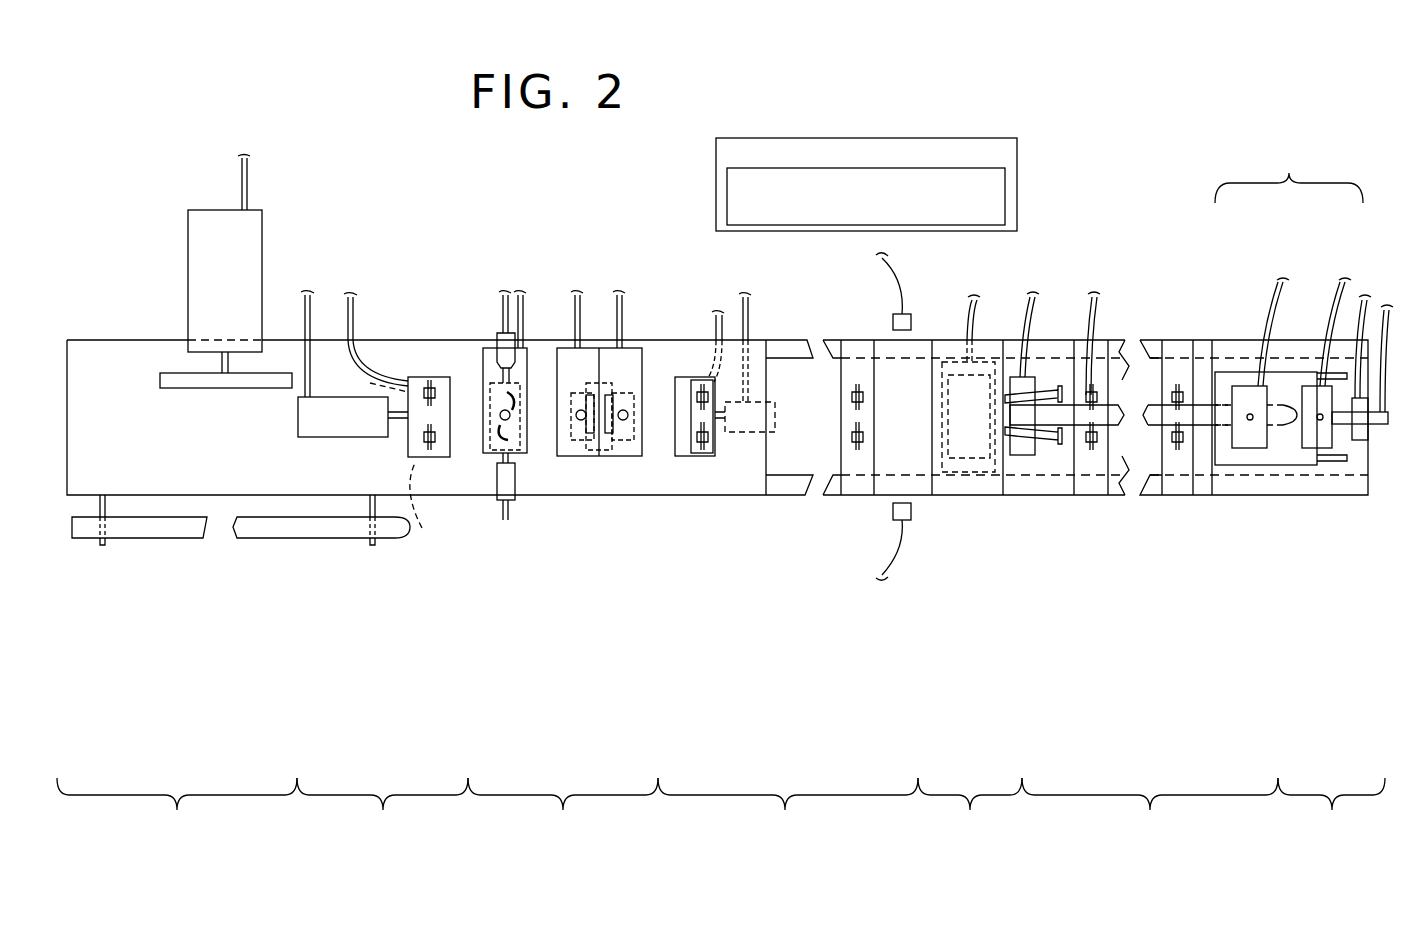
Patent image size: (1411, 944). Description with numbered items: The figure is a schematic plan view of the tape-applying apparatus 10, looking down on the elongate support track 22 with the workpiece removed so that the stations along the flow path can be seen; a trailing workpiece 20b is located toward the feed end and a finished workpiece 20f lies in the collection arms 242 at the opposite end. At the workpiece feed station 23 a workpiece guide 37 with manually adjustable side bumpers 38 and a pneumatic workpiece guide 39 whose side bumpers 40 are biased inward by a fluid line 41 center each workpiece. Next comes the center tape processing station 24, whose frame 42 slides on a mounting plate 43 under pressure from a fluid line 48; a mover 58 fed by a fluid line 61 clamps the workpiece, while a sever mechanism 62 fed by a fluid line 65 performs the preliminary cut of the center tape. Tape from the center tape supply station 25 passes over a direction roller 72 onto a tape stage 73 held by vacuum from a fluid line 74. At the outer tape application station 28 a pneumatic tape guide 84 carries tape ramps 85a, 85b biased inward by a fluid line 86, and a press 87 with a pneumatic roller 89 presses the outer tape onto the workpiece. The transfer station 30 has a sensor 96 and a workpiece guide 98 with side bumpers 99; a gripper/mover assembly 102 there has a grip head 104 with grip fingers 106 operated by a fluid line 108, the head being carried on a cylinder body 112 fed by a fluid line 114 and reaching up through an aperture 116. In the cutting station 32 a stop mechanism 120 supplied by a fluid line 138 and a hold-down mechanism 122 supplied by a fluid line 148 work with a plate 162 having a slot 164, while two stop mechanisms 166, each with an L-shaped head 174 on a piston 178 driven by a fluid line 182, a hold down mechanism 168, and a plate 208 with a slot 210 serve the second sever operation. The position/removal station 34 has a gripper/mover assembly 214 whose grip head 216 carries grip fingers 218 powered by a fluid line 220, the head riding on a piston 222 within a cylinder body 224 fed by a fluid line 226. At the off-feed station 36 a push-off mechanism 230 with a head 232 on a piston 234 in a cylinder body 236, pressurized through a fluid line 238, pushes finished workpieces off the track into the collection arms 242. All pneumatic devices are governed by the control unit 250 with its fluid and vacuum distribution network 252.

The apparatus 10 is at (1105, 150).
The trailing workpiece 20b is at (1128, 408).
The finished workpiece 20f is at (278, 528).
The elongate support track 22 is at (100, 340).
The workpiece feed station 23 is at (1150, 810).
The center tape processing station 24 is at (1289, 175).
The center tape supply station 25 is at (1331, 810).
The outer tape application station 28 is at (970, 810).
The transfer station 30 is at (788, 810).
The cutting station 32 is at (563, 810).
The position/removal station 34 is at (382, 810).
The off-feed station 36 is at (177, 810).
The workpiece guide 37 is at (1163, 490).
The movable side bumpers 38 is at (1172, 392).
The pneumatic workpiece guide 39 is at (1092, 494).
The side bumpers 40 is at (1084, 390).
The fluid line 41 is at (1096, 312).
The frame 42 is at (1241, 462).
The mounting plate 43 is at (1282, 470).
The fluid line 48 is at (1378, 302).
The mover 58 is at (1242, 390).
The fluid line 61 is at (1268, 308).
The sever mechanism 62 is at (1300, 388).
The fluid line 65 is at (1330, 310).
The direction roller 72 is at (1380, 460).
The tape stage 73 is at (1352, 466).
The fluid line 74 is at (1356, 350).
The pneumatic tape guide 84 is at (1028, 456).
The tape ramp 85a is at (1042, 392).
The tape ramp 85b is at (1040, 455).
The fluid line 86 is at (1024, 322).
The press 87 is at (972, 494).
The pneumatic roller 89 is at (962, 433).
The sensor 96 is at (893, 320).
The workpiece guide 98 is at (851, 492).
The movable side bumpers 99 is at (866, 397).
The gripper/mover assembly 102 is at (780, 388).
The grip head 104 is at (710, 448).
The grip fingers 106 is at (698, 394).
The fluid line 108 is at (722, 338).
The cylinder body 112 is at (776, 412).
The fluid line 114 is at (748, 310).
The aperture 116 is at (678, 400).
The stop mechanism 120 is at (557, 344).
The hold-down mechanism 122 is at (638, 328).
The fluid line 138 is at (582, 322).
The fluid line 148 is at (638, 328).
The plate 162 is at (588, 458).
The slot 164 is at (608, 458).
The stop mechanisms 166 is at (487, 340).
The hold down mechanism 168 is at (483, 370).
The L-shaped head 174 is at (518, 452).
The piston 178 is at (496, 470).
The fluid line 182 is at (494, 336).
The plate 208 is at (494, 436).
The slot 210 is at (496, 405).
The gripper/mover assembly 214 is at (354, 220).
The grip head 216 is at (430, 446).
The grip fingers 218 is at (385, 460).
The fluid line 220 is at (352, 335).
The piston 222 is at (400, 424).
The cylinder body 224 is at (336, 436).
The fluid line 226 is at (303, 322).
The push-off mechanism 230 is at (212, 188).
The head 232 is at (236, 385).
The piston 234 is at (166, 338).
The cylinder body 236 is at (203, 252).
The fluid line 238 is at (246, 186).
The collection arms 242 is at (104, 546).
The control unit 250 is at (1000, 142).
The fluid and vacuum distribution network 252 is at (735, 215).